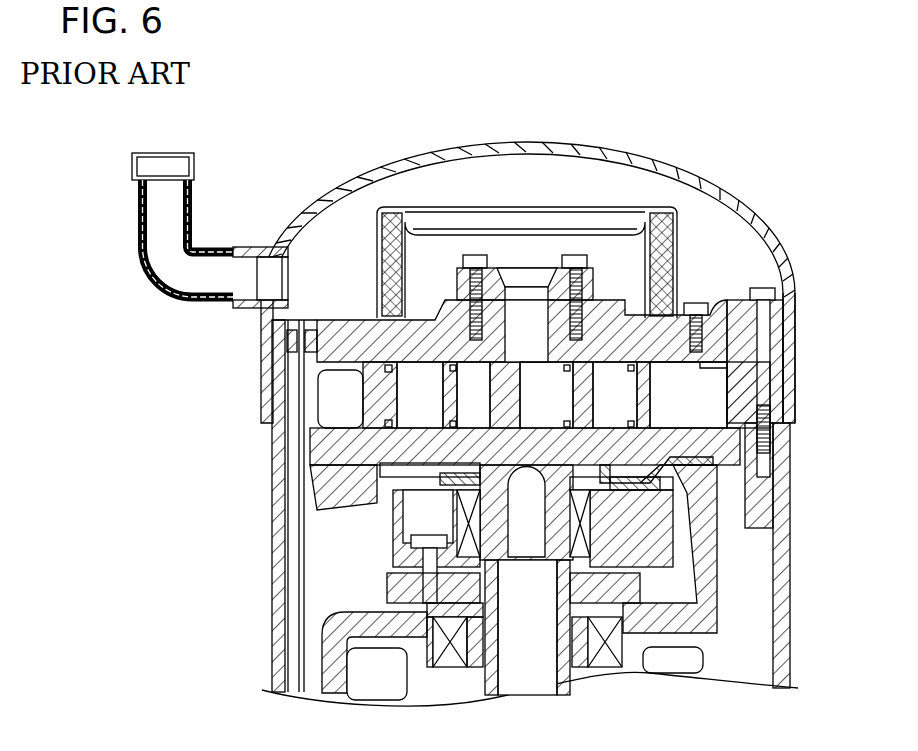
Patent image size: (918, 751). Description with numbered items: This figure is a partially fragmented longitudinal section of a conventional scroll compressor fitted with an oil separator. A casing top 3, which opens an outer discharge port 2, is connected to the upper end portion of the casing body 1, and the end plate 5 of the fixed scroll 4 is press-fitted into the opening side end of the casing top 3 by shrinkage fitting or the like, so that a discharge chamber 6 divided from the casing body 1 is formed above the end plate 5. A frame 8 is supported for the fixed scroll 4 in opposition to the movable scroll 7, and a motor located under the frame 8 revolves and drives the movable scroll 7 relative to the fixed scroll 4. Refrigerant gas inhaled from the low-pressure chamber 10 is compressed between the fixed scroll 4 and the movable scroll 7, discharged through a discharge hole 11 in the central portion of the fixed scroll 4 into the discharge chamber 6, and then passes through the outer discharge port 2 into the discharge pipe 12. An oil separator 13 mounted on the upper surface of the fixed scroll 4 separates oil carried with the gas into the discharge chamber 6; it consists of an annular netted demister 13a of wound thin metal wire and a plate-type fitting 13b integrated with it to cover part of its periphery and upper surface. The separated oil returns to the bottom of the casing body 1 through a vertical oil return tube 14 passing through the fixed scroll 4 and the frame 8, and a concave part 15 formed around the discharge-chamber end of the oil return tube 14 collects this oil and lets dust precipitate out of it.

The casing body 1 is at (775, 470).
The outer discharge port 2 is at (277, 280).
The casing top 3 is at (768, 234).
The fixed scroll 4 is at (707, 302).
The end plate 5 is at (775, 343).
The discharge chamber 6 is at (570, 170).
The movable scroll 7 is at (760, 490).
The frame 8 is at (712, 558).
The low-pressure chamber 10 is at (752, 636).
The discharge hole 11 is at (538, 335).
The discharge pipe 12 is at (192, 172).
The oil separator 13 is at (586, 190).
The demister 13a is at (680, 223).
The plate-type fitting 13b is at (652, 205).
The oil return tube 14 is at (303, 674).
The concave part 15 is at (267, 327).